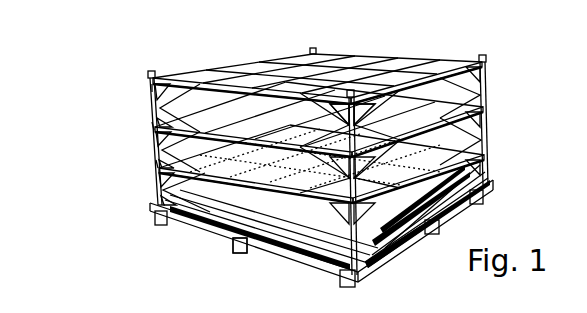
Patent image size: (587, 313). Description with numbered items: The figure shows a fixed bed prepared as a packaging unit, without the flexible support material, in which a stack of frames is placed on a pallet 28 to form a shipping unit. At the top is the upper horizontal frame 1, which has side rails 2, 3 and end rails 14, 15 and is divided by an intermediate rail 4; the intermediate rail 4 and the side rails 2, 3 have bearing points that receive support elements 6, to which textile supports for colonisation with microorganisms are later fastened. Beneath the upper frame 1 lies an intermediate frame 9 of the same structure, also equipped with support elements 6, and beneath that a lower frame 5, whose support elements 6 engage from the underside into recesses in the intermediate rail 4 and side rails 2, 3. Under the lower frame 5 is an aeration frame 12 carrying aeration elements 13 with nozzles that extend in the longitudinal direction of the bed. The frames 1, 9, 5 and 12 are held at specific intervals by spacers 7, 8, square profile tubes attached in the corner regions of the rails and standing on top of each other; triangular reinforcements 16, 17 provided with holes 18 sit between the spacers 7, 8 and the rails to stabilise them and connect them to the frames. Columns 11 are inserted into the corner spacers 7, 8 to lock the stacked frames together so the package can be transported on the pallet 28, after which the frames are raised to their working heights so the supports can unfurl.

The upper horizontal frame 1 is at (439, 57).
The side rail 2 is at (455, 62).
The side rail 3 is at (174, 78).
The intermediate rail 4 is at (390, 78).
The lower frame 5 is at (490, 115).
The support element 6 is at (418, 68).
The spacer 7 is at (157, 153).
The spacer 8 is at (152, 101).
The intermediate frame 9 is at (455, 99).
The column 11 is at (152, 70).
The aeration frame 12 is at (490, 195).
The aeration element 13 is at (497, 186).
The end rail 14 is at (483, 60).
The end rail 15 is at (270, 60).
The triangular reinforcement 16 is at (333, 107).
The triangular reinforcement 17 is at (358, 112).
The hole 18 is at (268, 256).
The pallet 28 is at (395, 263).